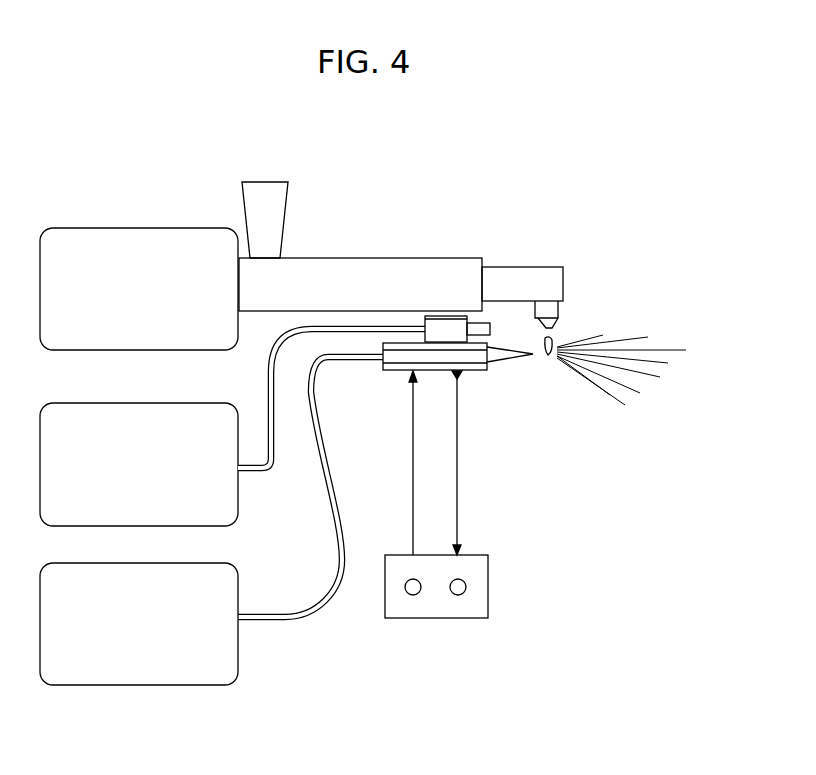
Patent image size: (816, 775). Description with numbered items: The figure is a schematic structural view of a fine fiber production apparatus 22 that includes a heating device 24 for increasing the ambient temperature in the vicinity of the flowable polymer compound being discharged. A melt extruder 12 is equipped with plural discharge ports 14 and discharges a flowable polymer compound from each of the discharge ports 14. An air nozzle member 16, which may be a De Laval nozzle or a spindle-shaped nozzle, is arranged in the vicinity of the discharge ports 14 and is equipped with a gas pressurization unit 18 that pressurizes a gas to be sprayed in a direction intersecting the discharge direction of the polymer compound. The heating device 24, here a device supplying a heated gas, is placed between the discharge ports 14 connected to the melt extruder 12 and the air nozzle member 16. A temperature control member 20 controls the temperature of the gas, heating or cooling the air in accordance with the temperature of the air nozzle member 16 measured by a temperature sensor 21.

The fine fiber production apparatus 22 is at (401, 224).
The melt extruder 12 is at (378, 266).
The heating device 24 is at (437, 314).
The discharge ports 14 is at (562, 333).
The air nozzle member 16 is at (397, 371).
The temperature sensor 21 is at (460, 376).
The temperature control member 20 is at (489, 590).
The gas pressurization unit 18 is at (141, 686).